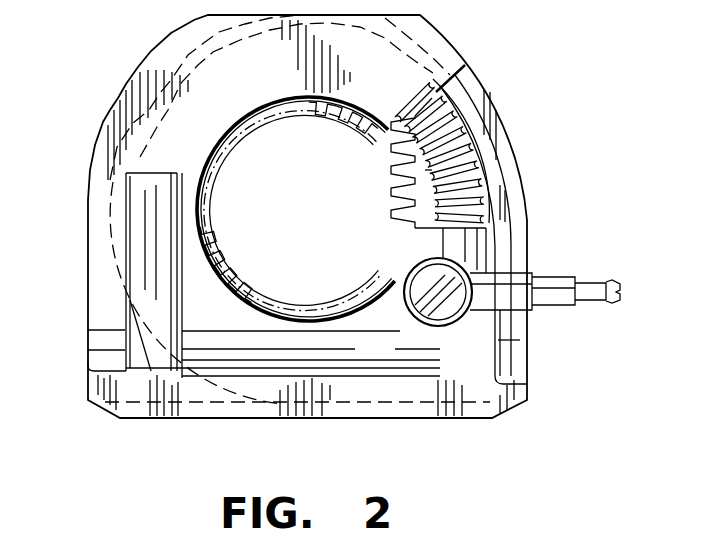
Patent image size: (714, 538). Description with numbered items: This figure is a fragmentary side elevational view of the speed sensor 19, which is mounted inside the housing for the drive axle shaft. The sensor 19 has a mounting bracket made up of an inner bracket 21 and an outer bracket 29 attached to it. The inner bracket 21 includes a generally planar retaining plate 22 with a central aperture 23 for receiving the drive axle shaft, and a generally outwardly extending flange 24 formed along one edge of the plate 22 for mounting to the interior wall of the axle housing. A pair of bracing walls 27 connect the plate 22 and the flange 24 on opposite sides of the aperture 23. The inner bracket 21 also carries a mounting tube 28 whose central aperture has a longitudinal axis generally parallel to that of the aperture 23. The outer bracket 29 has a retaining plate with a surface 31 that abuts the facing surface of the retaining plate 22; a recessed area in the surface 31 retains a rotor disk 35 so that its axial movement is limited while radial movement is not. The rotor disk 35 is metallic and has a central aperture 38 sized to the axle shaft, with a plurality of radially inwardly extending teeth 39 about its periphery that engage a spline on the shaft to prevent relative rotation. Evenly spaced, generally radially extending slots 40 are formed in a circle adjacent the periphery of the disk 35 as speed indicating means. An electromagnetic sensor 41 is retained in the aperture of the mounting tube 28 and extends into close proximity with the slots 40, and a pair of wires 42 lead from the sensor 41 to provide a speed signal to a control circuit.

The speed sensor 19 is at (95, 66).
The inner bracket 21 is at (108, 300).
The retaining plate 22 is at (110, 135).
The central aperture 23 is at (363, 310).
The flange 24 is at (402, 412).
The bracing walls 27 is at (142, 232).
The mounting tube 28 is at (413, 260).
The outer bracket 29 is at (510, 118).
The surface 31 is at (520, 192).
The rotor disk 35 is at (448, 92).
The central aperture 38 is at (226, 248).
The teeth 39 is at (368, 124).
The slots 40 is at (480, 167).
The electromagnetic sensor 41 is at (432, 300).
The wires 42 is at (616, 284).